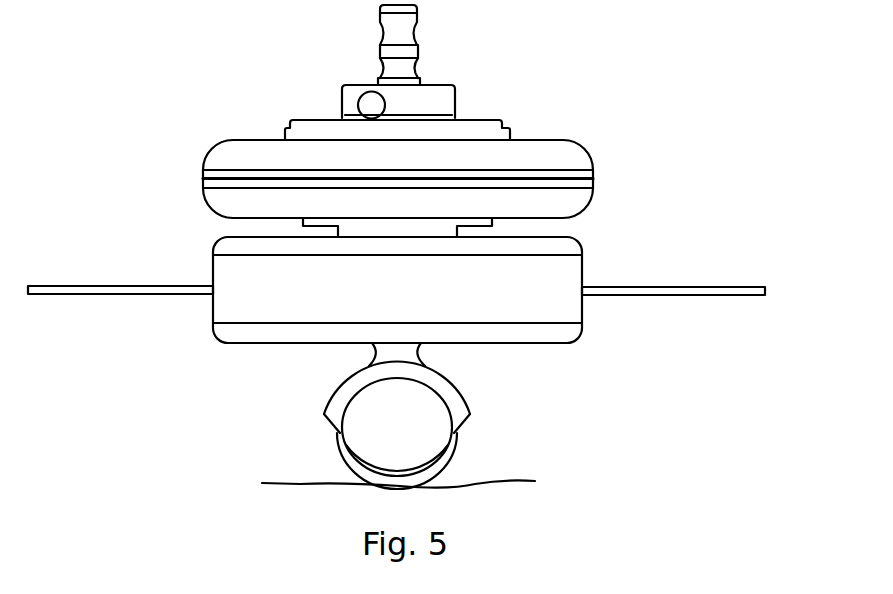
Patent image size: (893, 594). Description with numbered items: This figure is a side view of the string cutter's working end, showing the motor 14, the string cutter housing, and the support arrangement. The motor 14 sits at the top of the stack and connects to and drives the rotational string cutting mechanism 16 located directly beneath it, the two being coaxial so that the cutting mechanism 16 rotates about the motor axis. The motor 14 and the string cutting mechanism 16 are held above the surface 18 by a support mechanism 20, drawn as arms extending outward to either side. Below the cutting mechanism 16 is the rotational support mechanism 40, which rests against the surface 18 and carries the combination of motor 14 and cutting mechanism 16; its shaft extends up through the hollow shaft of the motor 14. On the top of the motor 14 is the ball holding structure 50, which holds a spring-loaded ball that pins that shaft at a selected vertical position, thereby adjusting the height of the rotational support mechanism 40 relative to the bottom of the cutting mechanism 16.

The motor 14 is at (578, 144).
The rotational string cutting mechanism 16 is at (572, 341).
The surface 18 is at (318, 482).
The support mechanism 20 is at (100, 285).
The rotational support mechanism 40 is at (462, 432).
The ball holding structure 50 is at (443, 91).